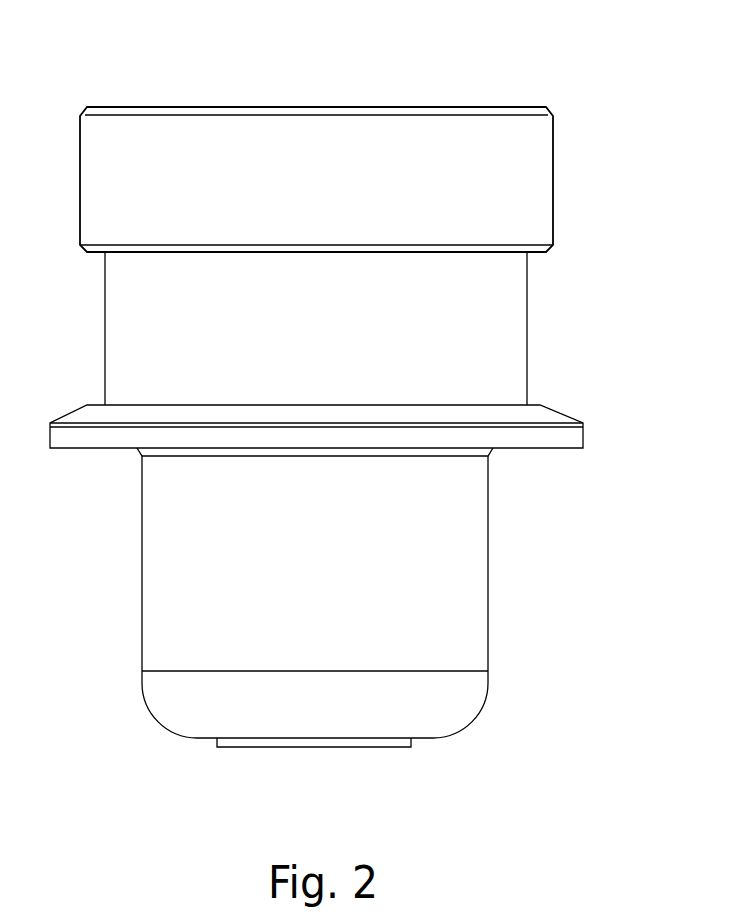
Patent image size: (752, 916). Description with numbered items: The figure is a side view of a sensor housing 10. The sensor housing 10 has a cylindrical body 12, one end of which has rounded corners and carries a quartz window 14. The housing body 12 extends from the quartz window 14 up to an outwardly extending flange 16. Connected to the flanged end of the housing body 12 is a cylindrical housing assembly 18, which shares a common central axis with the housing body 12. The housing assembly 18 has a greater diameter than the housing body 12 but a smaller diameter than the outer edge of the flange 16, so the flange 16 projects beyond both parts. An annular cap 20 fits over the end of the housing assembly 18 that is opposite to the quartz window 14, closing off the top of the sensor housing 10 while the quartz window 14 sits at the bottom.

The sensor housing 10 is at (321, 44).
The cylindrical body 12 is at (457, 575).
The quartz window 14 is at (300, 742).
The outwardly extending flange 16 is at (533, 443).
The cylindrical housing assembly 18 is at (485, 311).
The annular cap 20 is at (438, 138).